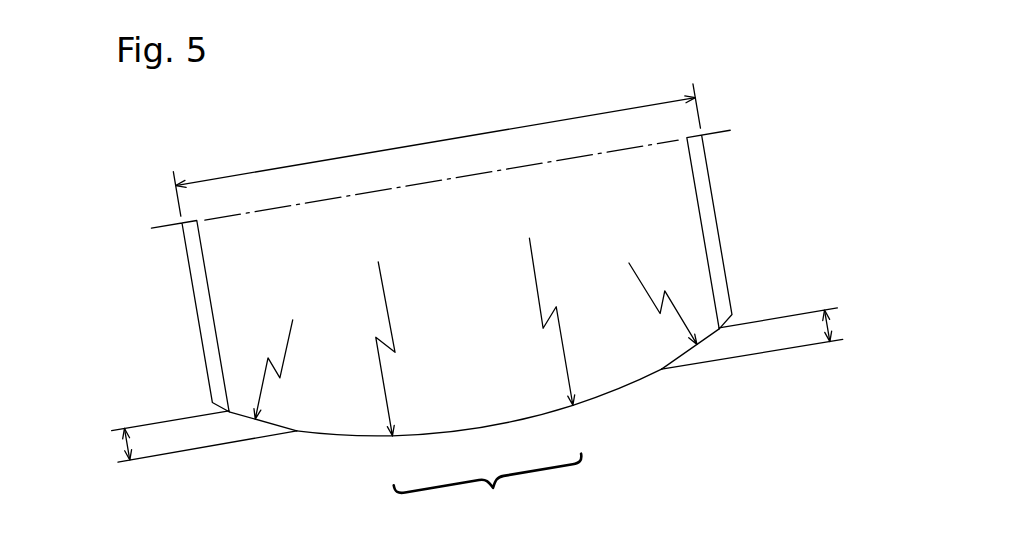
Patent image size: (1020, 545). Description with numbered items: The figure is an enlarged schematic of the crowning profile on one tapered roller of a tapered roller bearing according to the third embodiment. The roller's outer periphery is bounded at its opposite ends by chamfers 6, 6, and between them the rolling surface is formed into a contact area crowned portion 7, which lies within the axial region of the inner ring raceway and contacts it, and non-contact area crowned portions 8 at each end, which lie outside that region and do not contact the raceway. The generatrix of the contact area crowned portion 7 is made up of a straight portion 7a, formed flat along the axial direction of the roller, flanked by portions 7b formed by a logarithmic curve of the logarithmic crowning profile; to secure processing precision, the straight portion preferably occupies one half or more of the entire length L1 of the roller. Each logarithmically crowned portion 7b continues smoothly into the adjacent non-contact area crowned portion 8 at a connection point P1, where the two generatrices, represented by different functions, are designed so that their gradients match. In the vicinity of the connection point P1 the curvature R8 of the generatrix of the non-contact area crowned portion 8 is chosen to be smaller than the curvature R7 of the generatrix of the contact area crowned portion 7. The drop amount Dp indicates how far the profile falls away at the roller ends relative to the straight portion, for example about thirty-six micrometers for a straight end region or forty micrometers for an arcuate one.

The chamfer 6 is at (196, 277).
The contact area crowned portion 7 is at (481, 448).
The straight portion 7a is at (485, 428).
The logarithmic curve portion 7b is at (407, 436).
The non-contact area crowned portion 8 is at (693, 350).
The connection point P1 is at (297, 433).
The entire length of the roller L1 is at (362, 154).
The drop amount Dp is at (122, 448).
The curvature of contact area crowned portion generatrix R7 is at (531, 260).
The curvature of non-contact area crowned portion generatrix R8 is at (290, 328).